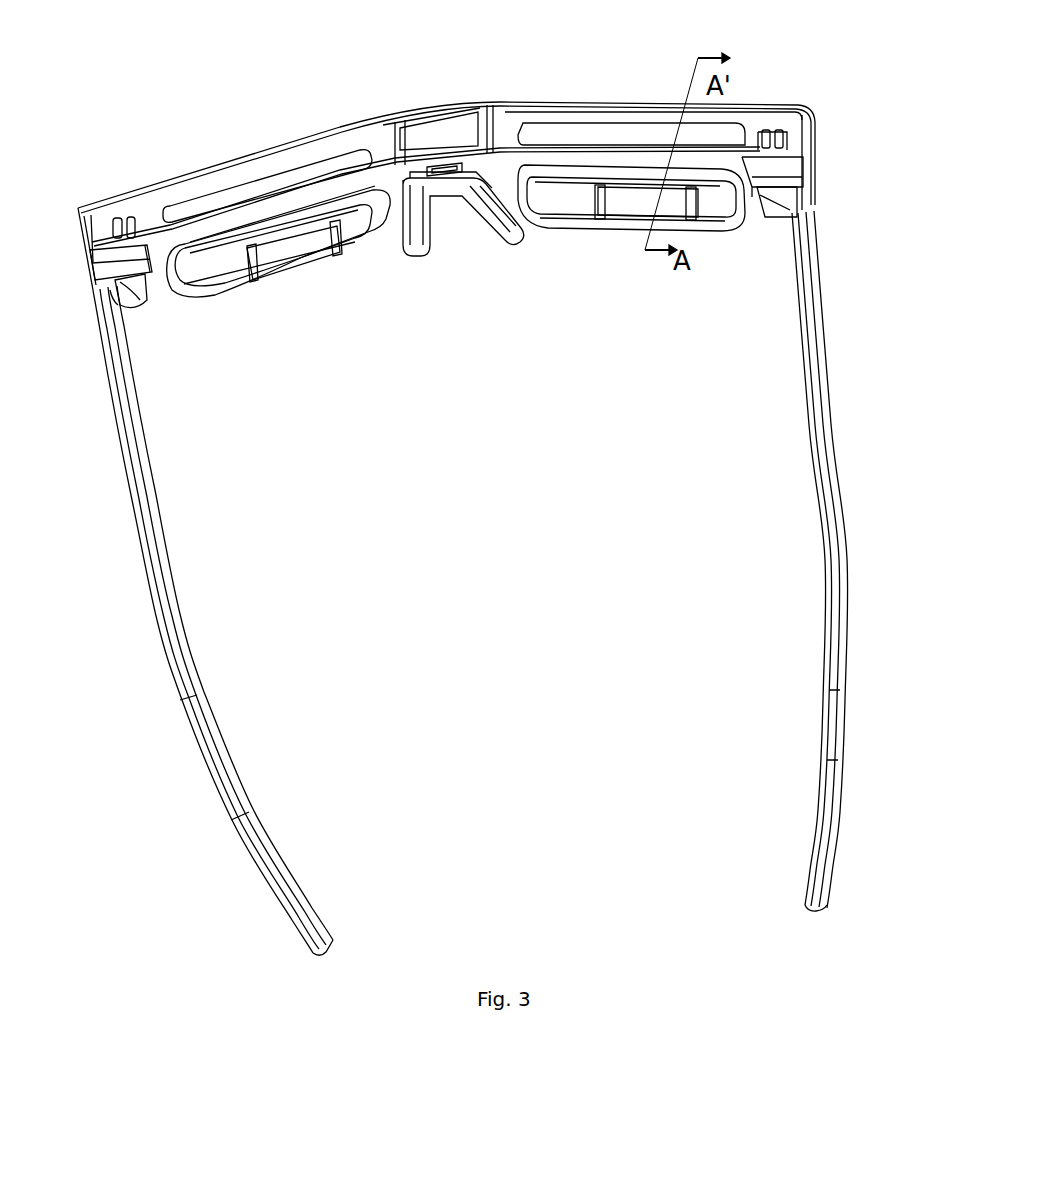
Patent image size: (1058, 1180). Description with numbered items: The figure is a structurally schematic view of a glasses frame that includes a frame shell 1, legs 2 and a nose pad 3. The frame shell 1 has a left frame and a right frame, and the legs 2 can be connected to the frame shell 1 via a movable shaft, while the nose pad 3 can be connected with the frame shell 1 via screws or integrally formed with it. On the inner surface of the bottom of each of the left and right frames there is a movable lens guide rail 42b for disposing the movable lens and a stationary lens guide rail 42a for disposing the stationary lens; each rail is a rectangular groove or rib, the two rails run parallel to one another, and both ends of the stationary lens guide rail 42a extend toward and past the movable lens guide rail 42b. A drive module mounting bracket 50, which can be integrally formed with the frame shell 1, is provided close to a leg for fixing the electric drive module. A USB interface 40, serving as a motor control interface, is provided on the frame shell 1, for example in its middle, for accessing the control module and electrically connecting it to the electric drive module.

The frame shell 1 is at (620, 100).
The legs 2 is at (830, 429).
The nose pad 3 is at (512, 223).
The USB interface 40 is at (442, 170).
The stationary lens guide rail 42a is at (303, 270).
The movable lens guide rail 42b is at (327, 275).
The drive module mounting bracket 50 is at (765, 132).